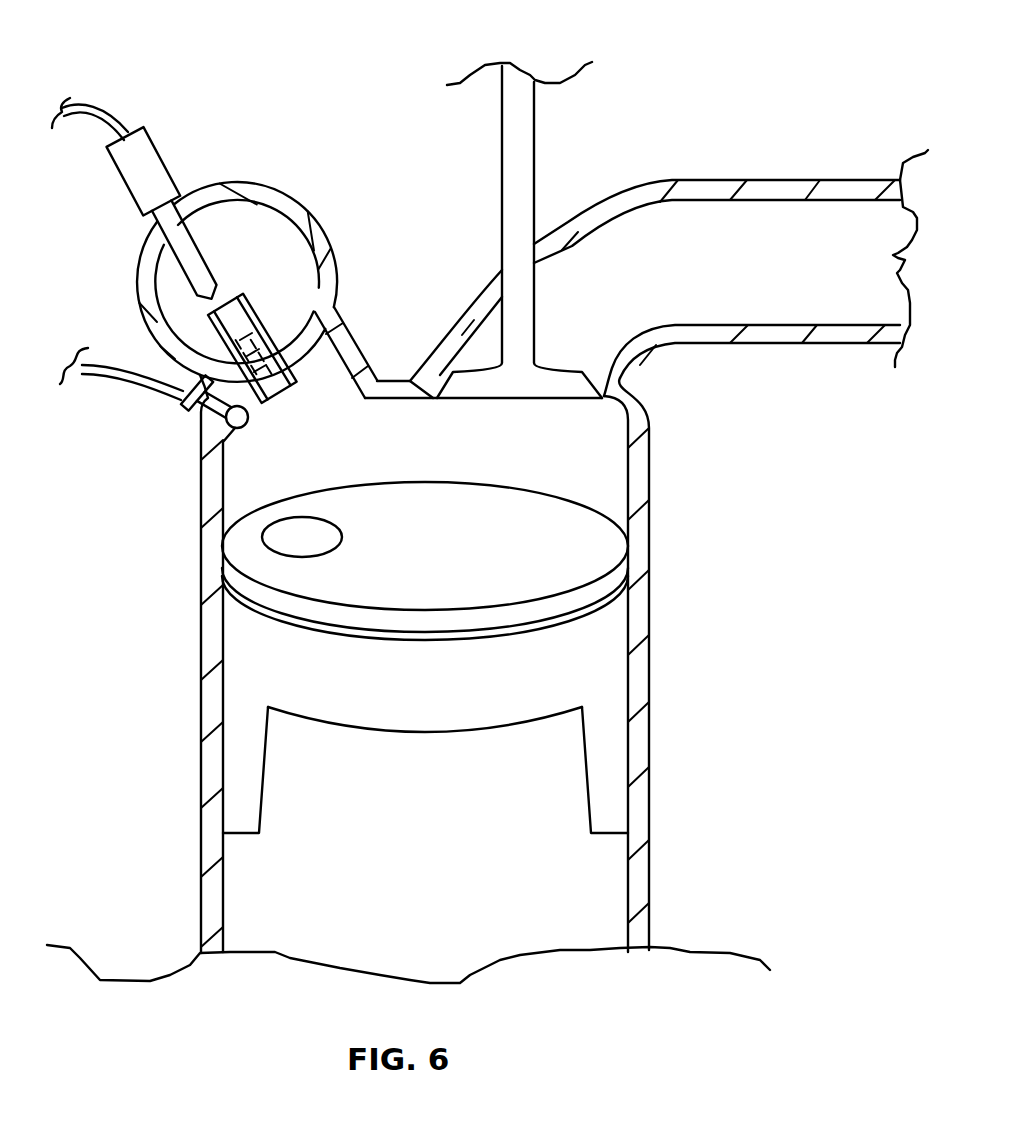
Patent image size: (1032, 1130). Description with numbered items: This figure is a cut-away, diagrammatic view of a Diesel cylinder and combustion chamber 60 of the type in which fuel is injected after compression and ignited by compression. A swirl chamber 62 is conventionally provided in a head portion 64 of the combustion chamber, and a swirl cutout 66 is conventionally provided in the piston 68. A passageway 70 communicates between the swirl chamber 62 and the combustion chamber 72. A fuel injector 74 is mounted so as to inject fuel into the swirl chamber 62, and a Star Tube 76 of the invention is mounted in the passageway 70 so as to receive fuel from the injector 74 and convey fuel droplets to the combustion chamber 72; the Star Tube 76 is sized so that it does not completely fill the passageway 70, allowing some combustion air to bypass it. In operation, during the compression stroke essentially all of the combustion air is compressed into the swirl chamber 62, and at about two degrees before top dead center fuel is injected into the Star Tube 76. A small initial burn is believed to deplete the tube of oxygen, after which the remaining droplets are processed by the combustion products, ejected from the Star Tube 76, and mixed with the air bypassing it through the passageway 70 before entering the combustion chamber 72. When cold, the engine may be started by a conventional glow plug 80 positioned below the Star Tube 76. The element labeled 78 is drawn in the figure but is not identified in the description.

The Diesel cylinder and combustion chamber 60 is at (723, 752).
The swirl chamber 62 is at (270, 198).
The head portion 64 is at (447, 186).
The swirl cutout 66 is at (296, 540).
The piston 68 is at (495, 569).
The passageway 70 is at (304, 343).
The combustion chamber 72 is at (450, 455).
The fuel injector 74 is at (150, 178).
The Star Tube 76 is at (283, 296).
The sensor element 78 is at (284, 399).
The glow plug 80 is at (228, 426).